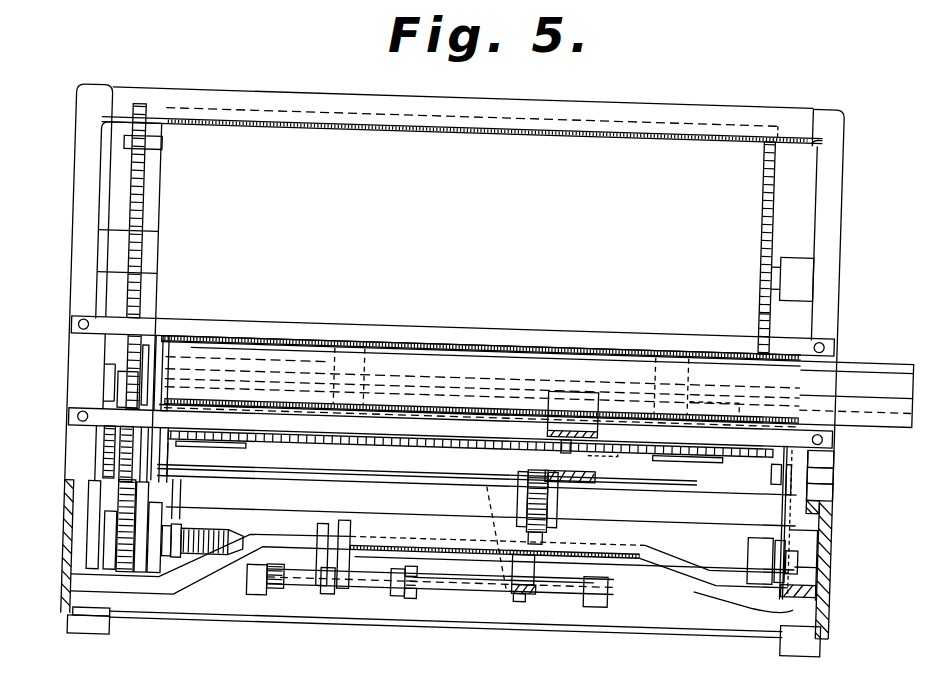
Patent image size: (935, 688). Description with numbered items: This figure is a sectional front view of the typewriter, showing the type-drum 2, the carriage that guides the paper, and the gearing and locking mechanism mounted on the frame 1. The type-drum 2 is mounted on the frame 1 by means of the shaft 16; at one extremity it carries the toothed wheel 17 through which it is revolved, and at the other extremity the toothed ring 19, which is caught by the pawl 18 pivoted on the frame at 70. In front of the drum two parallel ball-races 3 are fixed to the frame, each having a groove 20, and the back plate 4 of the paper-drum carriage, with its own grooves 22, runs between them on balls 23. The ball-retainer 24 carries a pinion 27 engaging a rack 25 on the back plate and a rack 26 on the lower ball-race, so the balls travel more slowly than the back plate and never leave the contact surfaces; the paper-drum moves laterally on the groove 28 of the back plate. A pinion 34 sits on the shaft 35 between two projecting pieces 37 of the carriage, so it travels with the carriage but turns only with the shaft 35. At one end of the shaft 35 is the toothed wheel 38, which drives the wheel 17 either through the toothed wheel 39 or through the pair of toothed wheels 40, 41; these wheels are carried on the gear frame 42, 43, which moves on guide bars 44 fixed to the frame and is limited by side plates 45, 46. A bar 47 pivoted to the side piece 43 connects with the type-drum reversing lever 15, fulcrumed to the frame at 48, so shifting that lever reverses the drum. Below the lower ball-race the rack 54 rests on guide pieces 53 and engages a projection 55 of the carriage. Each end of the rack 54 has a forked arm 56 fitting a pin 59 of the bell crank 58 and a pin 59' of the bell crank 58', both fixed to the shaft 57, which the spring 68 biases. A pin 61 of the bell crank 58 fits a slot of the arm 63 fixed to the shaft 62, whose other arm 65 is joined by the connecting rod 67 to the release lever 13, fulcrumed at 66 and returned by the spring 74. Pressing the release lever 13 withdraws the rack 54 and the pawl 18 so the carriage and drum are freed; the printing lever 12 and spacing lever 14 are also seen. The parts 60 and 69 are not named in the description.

The frame 1 is at (452, 370).
The type-drum 2 is at (460, 180).
The ball-race 3 is at (228, 328).
The back plate 4 is at (481, 401).
The printing lever 12 is at (280, 600).
The release lever 13 is at (345, 600).
The spacing lever 14 is at (410, 600).
The type-drum reversing lever 15 is at (522, 600).
The shaft 16 is at (757, 280).
The toothed wheel 17 is at (138, 192).
The pawl 18 is at (770, 387).
The toothed ring 19 is at (756, 311).
The groove 20 is at (300, 345).
The groove 22 is at (268, 394).
The ball 23 is at (360, 343).
The ball-retainer 24 is at (520, 345).
The rack 25 is at (448, 396).
The rack 26 is at (470, 448).
The pinion 27 is at (508, 400).
The groove 28 is at (248, 369).
The pinion 34 is at (545, 474).
The shaft 35 is at (481, 529).
The projecting piece 37 is at (520, 506).
The toothed wheel 38 is at (122, 540).
The toothed wheel 39 is at (108, 455).
The toothed wheel 40 is at (100, 478).
The toothed wheel 41 is at (118, 395).
The gear frame 42 is at (110, 531).
The gear frame side piece 43 is at (112, 560).
The guide bar 44 is at (118, 380).
The side plate 45 is at (92, 509).
The side plate 46 is at (190, 538).
The bar 47 is at (268, 485).
The fulcrum 48 is at (505, 590).
The guide piece 53 is at (188, 454).
The rack 54 is at (372, 450).
The projection 55 is at (600, 458).
The forked arm 56 is at (789, 478).
The shaft 57 is at (326, 545).
The bell crank 58 is at (765, 521).
The bell crank 58' is at (182, 495).
The pin 59 is at (759, 473).
The pin 59' is at (209, 500).
The nut 60 is at (804, 556).
The pin 61 is at (782, 598).
The shaft 62 is at (690, 585).
The arm 63 is at (780, 535).
The arm 65 is at (356, 545).
The fulcrum 66 is at (452, 598).
The connecting rod 67 is at (328, 530).
The spring 68 is at (238, 545).
The block 69 is at (815, 448).
The pivot 70 is at (818, 465).
The spring 74 is at (818, 482).